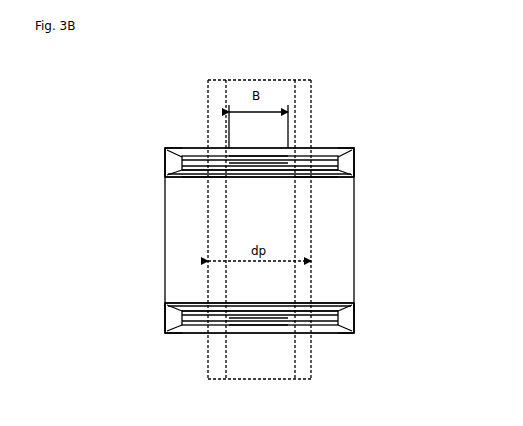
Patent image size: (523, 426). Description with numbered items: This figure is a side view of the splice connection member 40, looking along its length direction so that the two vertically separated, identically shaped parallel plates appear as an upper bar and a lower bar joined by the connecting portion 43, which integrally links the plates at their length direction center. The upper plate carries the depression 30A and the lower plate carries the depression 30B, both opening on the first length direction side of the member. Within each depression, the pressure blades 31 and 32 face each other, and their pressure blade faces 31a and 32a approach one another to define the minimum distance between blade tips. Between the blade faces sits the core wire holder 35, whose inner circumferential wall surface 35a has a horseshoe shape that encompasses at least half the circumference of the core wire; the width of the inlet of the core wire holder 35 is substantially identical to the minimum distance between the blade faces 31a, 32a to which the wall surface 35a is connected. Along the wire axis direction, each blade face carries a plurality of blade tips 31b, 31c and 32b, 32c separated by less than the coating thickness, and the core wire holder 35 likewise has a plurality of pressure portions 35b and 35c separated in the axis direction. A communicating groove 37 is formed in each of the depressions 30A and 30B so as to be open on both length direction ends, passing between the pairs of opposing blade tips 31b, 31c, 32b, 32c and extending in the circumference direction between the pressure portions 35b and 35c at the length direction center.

The depression 30A is at (357, 158).
The depression 30B is at (357, 320).
The pressure blade 31 is at (192, 147).
The pressure blade face 31a is at (203, 177).
The blade tip 31b is at (190, 148).
The blade tip 31c is at (168, 178).
The pressure blade 32 is at (330, 148).
The pressure blade face 32a is at (318, 177).
The blade tip 32b is at (345, 150).
The blade tip 32c is at (345, 179).
The core wire holder 35 is at (303, 148).
The inner circumferential wall surface 35a is at (272, 334).
The pressure portion 35b is at (247, 150).
The pressure portion 35c is at (242, 177).
The communicating groove 37 is at (170, 162).
The splice connection member 40 is at (357, 215).
The connecting portion 43 is at (345, 242).